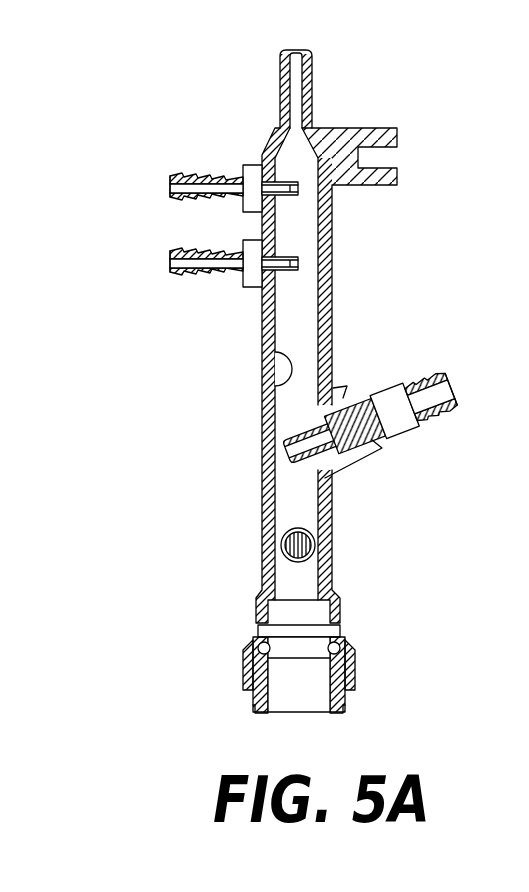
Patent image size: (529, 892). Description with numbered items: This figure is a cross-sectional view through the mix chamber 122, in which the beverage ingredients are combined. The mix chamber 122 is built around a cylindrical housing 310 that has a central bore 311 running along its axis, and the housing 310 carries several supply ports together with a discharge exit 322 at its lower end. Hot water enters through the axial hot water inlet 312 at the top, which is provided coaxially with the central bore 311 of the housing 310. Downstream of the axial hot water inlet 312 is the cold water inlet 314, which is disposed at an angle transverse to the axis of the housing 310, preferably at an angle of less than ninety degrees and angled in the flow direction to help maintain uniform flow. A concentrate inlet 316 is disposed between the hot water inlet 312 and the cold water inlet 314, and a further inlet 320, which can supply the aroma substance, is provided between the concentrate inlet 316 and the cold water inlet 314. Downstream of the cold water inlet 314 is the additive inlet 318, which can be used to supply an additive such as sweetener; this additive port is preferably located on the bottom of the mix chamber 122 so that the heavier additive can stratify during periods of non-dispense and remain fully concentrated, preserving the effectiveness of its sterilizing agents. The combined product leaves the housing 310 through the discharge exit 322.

The mix chamber 122 is at (214, 366).
The cylindrical housing 310 is at (262, 330).
The central bore 311 is at (277, 386).
The axial hot water inlet 312 is at (312, 80).
The cold water inlet 314 is at (344, 392).
The concentrate inlet 316 is at (245, 165).
The additive inlet 318 is at (316, 538).
The aroma inlet 320 is at (243, 248).
The discharge exit 322 is at (297, 690).